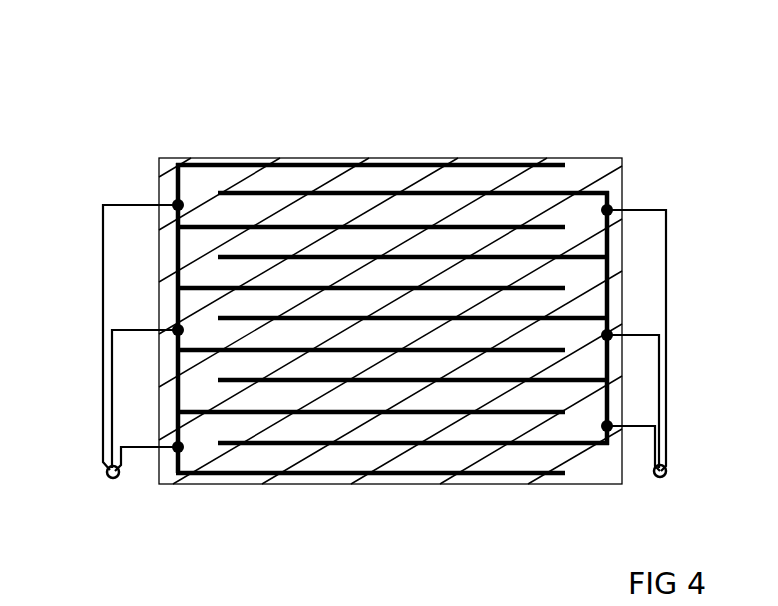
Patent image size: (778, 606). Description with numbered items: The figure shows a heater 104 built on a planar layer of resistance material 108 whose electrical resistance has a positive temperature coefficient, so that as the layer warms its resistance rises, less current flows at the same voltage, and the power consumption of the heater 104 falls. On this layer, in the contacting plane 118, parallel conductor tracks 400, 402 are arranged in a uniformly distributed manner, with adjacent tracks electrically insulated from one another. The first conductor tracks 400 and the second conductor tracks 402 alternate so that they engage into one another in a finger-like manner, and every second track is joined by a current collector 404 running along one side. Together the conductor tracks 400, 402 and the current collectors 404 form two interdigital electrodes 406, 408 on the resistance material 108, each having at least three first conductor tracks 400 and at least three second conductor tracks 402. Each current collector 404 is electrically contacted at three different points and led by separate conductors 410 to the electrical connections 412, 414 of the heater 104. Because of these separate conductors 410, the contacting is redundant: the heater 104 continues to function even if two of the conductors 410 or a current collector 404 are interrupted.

The heater 104 is at (290, 97).
The contacting plane 118 is at (412, 124).
The resistance material 108 is at (200, 188).
The interdigital electrode 406 is at (172, 165).
The second conductor tracks 402 is at (510, 225).
The interdigital electrode 408 is at (624, 189).
The first conductor tracks 400 is at (513, 257).
The current collector 404 is at (177, 248).
The conductors 410 is at (135, 443).
The electrical connection 412 is at (107, 479).
The electrical connection 414 is at (665, 472).